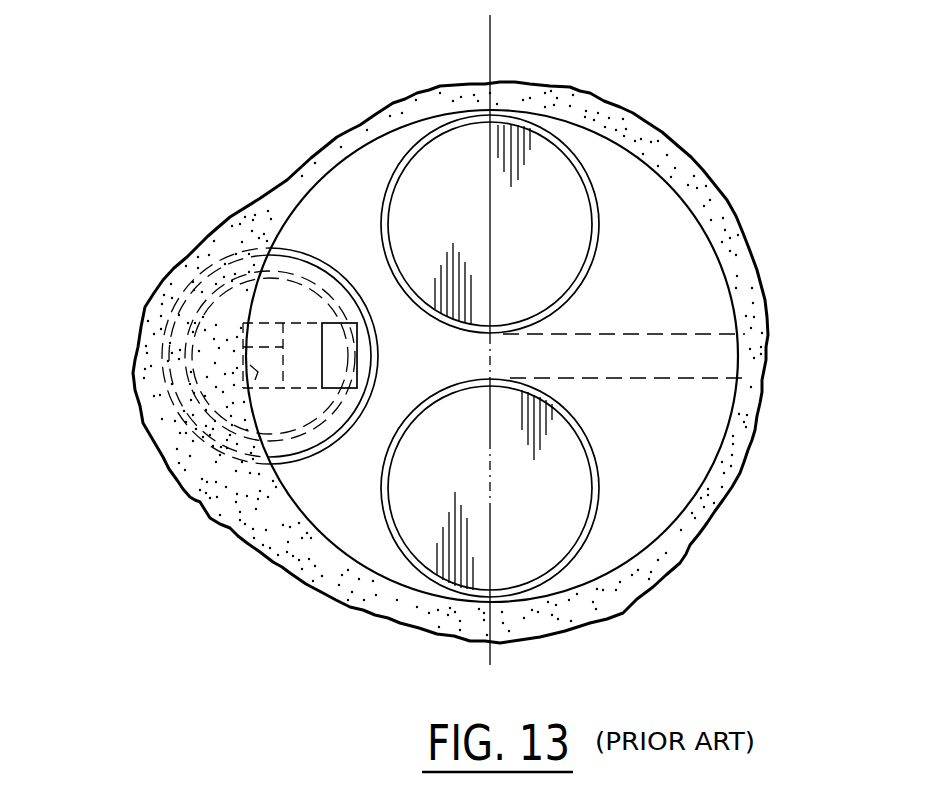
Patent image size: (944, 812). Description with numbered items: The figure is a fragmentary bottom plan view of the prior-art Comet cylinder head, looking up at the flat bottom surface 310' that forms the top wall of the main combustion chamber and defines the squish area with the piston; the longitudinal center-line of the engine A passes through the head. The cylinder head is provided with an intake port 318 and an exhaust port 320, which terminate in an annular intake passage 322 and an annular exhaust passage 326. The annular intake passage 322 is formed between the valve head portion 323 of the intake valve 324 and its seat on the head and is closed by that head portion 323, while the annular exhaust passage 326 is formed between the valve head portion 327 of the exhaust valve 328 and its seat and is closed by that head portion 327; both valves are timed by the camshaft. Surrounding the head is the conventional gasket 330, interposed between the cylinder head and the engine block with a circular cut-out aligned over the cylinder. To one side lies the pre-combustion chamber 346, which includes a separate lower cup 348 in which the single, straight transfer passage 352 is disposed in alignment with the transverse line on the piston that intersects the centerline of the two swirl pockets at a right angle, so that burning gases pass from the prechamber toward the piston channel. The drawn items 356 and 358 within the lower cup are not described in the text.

The longitudinal center-line of the engine A is at (490, 50).
The bottom surface of the cylinder head 310' is at (492, 356).
The intake port 318 is at (653, 332).
The exhaust port 320 is at (610, 380).
The annular intake passage 322 is at (422, 138).
The valve head portion of the intake valve 323 is at (560, 246).
The intake valve 324 is at (576, 154).
The annular exhaust passage 326 is at (575, 424).
The valve head portion of the exhaust valve 327 is at (560, 519).
The exhaust valve 328 is at (602, 511).
The gasket 330 is at (683, 162).
The pre-combustion chamber 346 is at (310, 280).
The lower cup 348 is at (342, 440).
The transfer passage 352 is at (208, 323).
The dashed connector block 356 is at (257, 388).
The connector block 358 is at (338, 325).